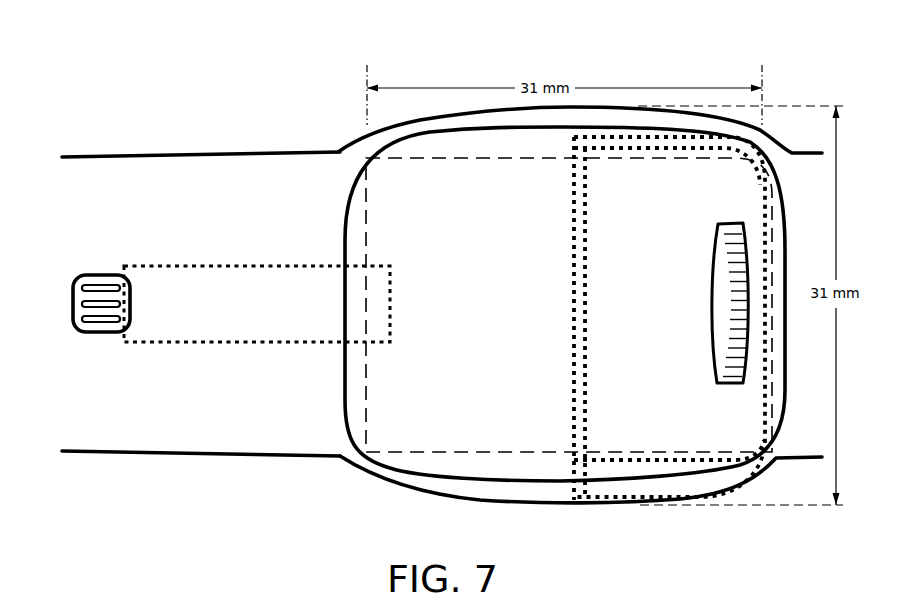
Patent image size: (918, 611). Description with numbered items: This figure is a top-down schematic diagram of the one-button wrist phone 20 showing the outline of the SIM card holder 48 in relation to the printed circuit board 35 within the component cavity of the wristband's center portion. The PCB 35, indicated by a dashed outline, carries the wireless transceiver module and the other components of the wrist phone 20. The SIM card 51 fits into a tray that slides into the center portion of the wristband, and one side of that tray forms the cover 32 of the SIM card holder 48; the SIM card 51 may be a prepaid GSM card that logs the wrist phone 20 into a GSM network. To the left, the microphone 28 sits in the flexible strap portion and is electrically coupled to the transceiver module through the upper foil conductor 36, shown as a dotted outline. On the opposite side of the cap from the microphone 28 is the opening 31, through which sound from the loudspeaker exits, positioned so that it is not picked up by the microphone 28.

The one-button wrist phone 20 is at (268, 86).
The microphone 28 is at (108, 334).
The upper foil conductor 36 is at (196, 264).
The printed circuit board 35 is at (470, 452).
The cover 32 is at (626, 510).
The SIM card holder 48 is at (572, 258).
The SIM card 51 is at (588, 259).
The opening 31 is at (721, 251).